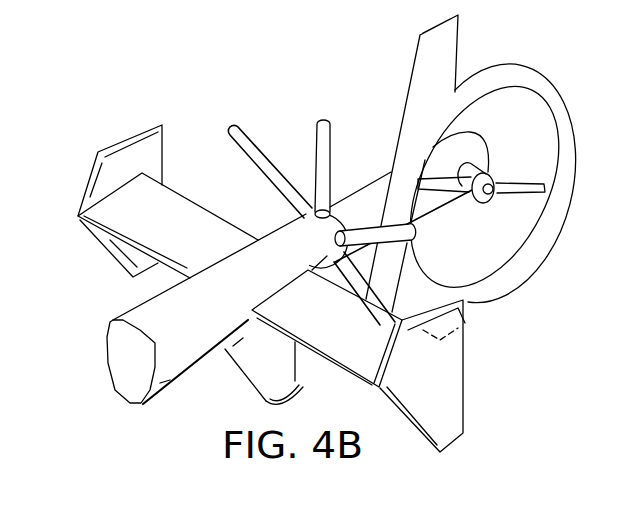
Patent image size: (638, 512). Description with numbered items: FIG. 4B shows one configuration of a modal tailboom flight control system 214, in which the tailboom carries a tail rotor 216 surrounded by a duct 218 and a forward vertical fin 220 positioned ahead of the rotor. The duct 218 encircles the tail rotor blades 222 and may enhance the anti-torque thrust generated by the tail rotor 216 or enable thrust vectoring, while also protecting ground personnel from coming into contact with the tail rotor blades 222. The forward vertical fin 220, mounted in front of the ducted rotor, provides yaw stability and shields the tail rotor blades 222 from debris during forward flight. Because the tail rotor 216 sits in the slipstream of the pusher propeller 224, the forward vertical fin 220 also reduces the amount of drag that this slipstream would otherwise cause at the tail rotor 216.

The modal tailboom flight control system 214 is at (220, 83).
The tail rotor 216 is at (483, 97).
The duct 218 is at (550, 82).
The forward vertical fin 220 is at (418, 45).
The tail rotor blades 222 is at (512, 175).
The pusher propeller 224 is at (304, 130).